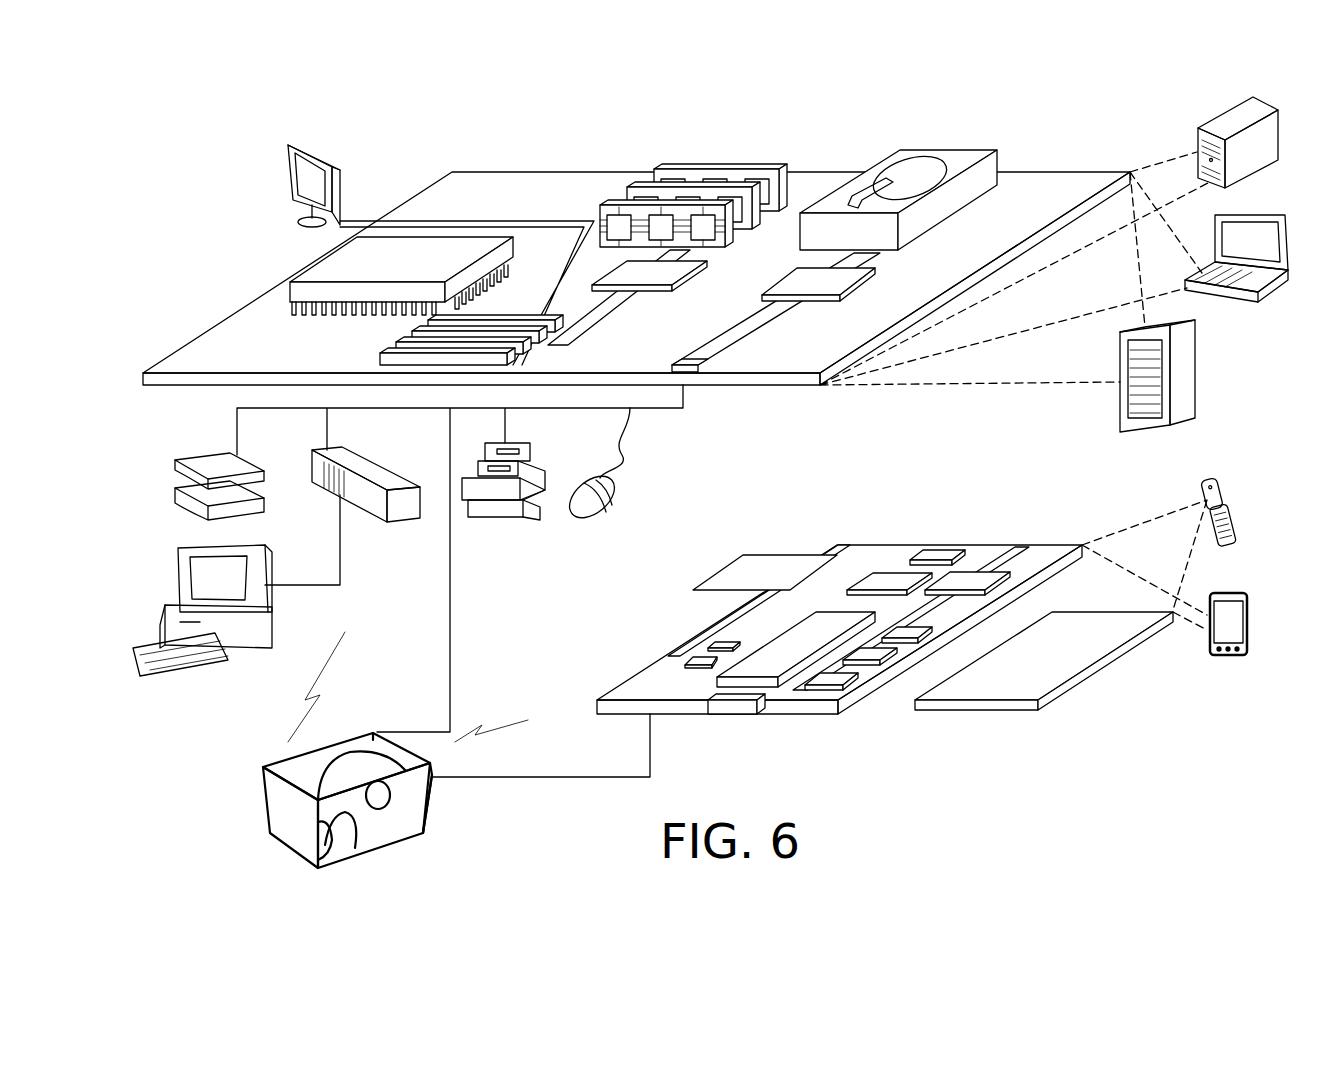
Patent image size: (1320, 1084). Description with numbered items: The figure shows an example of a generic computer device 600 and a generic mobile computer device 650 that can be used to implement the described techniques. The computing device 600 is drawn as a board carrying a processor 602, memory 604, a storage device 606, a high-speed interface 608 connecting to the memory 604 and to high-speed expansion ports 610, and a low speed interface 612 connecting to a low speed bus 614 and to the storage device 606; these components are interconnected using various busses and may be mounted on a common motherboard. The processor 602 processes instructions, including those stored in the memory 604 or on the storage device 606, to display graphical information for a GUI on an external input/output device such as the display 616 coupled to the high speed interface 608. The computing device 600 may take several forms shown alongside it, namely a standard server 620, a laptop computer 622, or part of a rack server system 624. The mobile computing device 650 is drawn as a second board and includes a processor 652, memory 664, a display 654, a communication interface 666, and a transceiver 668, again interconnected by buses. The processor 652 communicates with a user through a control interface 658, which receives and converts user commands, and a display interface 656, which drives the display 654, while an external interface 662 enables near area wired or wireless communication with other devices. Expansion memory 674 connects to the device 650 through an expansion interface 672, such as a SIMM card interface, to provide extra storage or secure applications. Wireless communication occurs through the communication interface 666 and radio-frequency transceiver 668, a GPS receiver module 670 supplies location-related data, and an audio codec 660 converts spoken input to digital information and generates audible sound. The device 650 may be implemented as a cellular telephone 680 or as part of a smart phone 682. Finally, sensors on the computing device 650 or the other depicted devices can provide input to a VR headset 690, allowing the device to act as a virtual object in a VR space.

The computer device 600 is at (405, 127).
The processor 602 is at (312, 265).
The memory 604 is at (725, 165).
The storage device 606 is at (935, 149).
The high-speed interface 608 is at (662, 270).
The high-speed expansion ports 610 is at (403, 338).
The low speed interface 612 is at (793, 278).
The low speed bus 614 is at (688, 360).
The display 616 is at (290, 143).
The standard server 620 is at (1218, 122).
The laptop computer 622 is at (1267, 215).
The rack server system 624 is at (1196, 376).
The mobile computer device 650 is at (1114, 702).
The processor 652 is at (768, 656).
The display 654 is at (1078, 625).
The display interface 656 is at (842, 678).
The control interface 658 is at (878, 655).
The audio codec 660 is at (912, 620).
The external interface 662 is at (735, 707).
The memory 664 is at (690, 663).
The communication interface 666 is at (885, 575).
The transceiver 668 is at (975, 575).
The GPS receiver module 670 is at (935, 553).
The expansion interface 672 is at (820, 555).
The expansion memory 674 is at (742, 556).
The cellular telephone 680 is at (1210, 476).
The smart phone 682 is at (1222, 592).
The VR headset 690 is at (441, 786).